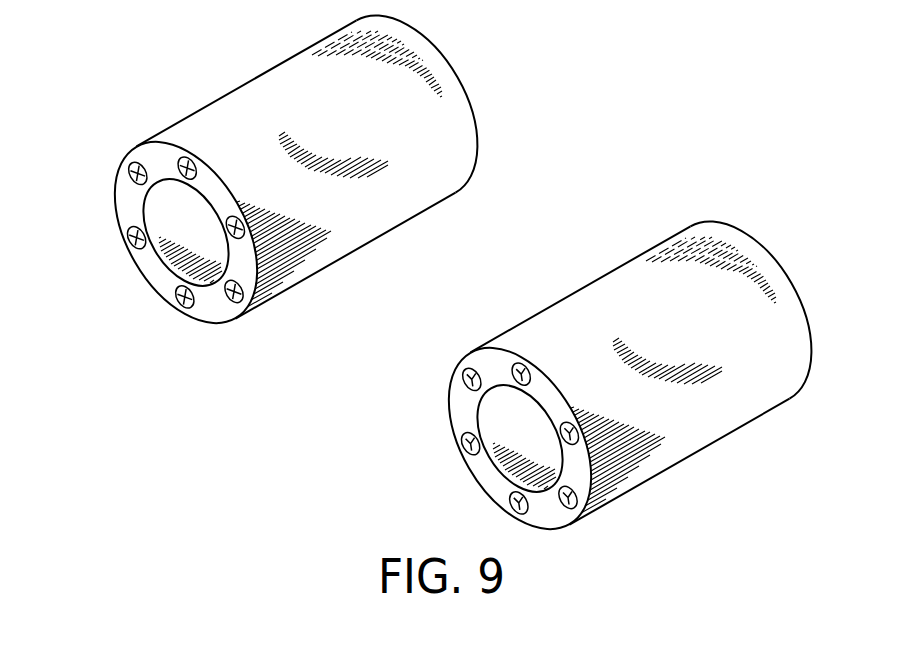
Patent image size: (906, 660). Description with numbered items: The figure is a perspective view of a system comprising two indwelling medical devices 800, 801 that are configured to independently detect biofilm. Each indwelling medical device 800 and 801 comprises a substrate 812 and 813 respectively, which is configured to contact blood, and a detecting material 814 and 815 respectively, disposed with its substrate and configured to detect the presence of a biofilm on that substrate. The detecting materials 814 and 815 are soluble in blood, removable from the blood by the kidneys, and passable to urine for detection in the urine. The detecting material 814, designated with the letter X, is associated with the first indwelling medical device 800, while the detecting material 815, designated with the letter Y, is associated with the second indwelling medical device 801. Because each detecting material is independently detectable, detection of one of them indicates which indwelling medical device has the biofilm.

The indwelling medical device 800 is at (158, 87).
The indwelling medical device 801 is at (492, 293).
The substrate 812 is at (127, 195).
The substrate 813 is at (462, 402).
The detecting material 814 is at (130, 245).
The detecting material 815 is at (465, 451).